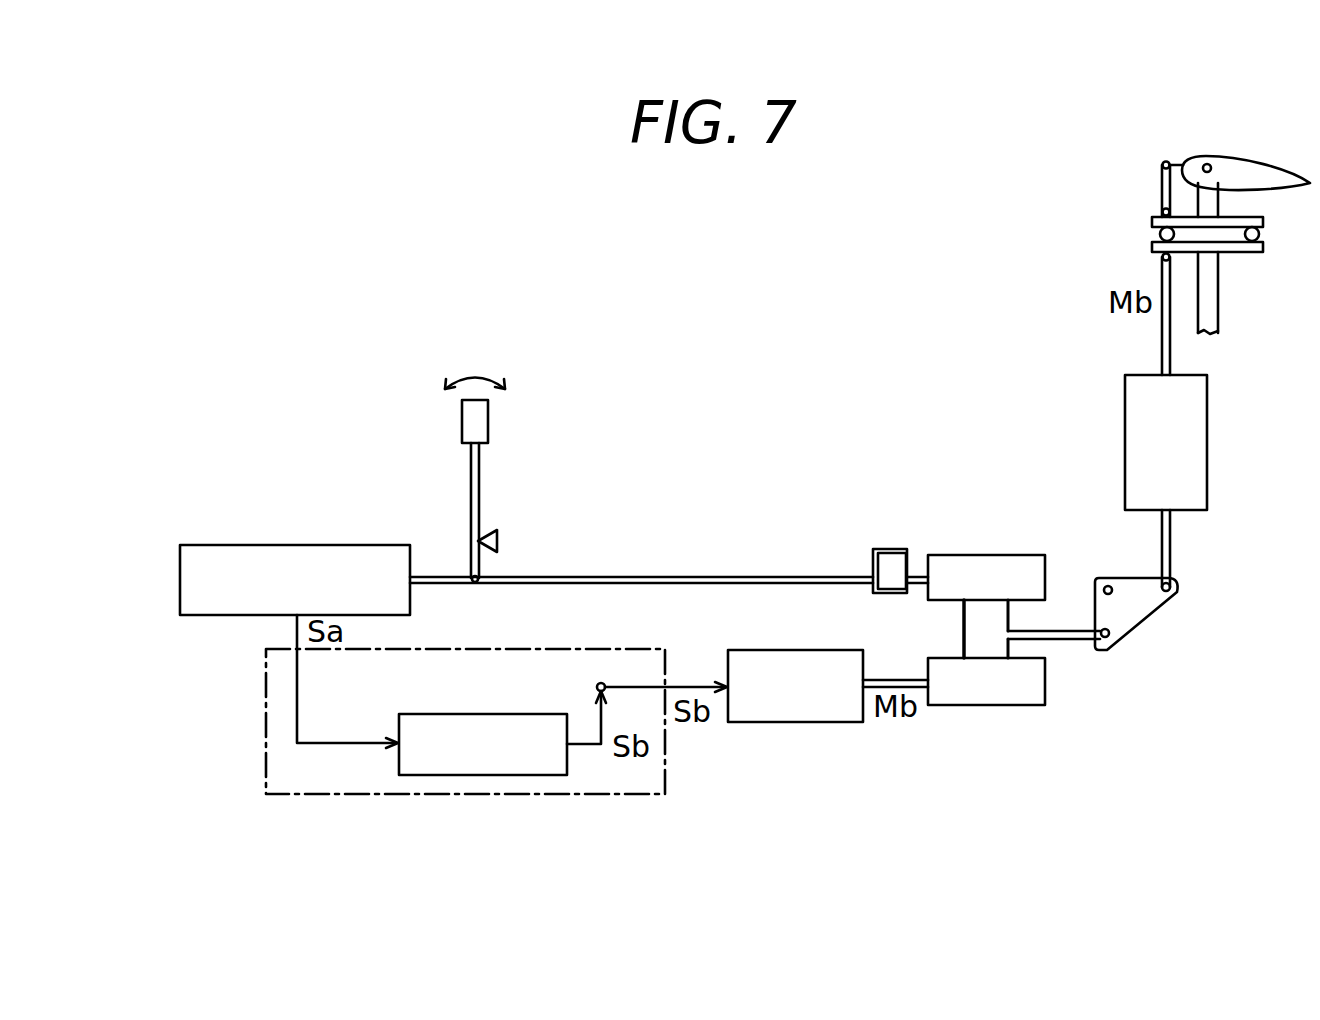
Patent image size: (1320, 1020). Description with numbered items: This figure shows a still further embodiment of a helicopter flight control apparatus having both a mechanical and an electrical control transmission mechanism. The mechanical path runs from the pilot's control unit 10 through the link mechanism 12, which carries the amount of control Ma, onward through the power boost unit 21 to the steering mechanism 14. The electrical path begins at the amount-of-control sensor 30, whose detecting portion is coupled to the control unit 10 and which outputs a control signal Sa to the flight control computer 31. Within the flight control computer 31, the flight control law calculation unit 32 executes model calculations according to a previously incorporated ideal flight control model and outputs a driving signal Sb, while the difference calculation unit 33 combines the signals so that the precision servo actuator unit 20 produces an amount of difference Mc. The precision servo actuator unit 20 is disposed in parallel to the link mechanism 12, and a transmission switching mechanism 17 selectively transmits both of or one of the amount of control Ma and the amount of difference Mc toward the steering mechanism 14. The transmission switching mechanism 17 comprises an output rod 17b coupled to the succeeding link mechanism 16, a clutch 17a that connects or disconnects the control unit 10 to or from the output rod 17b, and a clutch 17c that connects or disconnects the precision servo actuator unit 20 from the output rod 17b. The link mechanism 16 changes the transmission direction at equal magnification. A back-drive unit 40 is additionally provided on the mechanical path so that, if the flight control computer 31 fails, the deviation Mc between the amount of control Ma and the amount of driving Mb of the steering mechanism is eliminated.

The control unit 10 is at (475, 422).
The link mechanism 12 is at (722, 576).
The steering mechanism 14 is at (1240, 140).
The link mechanism 16 is at (1166, 621).
The transmission switching mechanism 17 is at (997, 615).
The clutch 17a is at (1007, 555).
The output rod 17b is at (1072, 640).
The clutch 17c is at (983, 706).
The precision servo actuator unit 20 is at (815, 708).
The power boost unit 21 is at (1208, 437).
The amount-of-control sensor 30 is at (360, 550).
The flight control computer 31 is at (613, 783).
The flight control law calculation unit 32 is at (460, 776).
The difference calculation unit 33 is at (603, 683).
The back-drive unit 40 is at (890, 556).